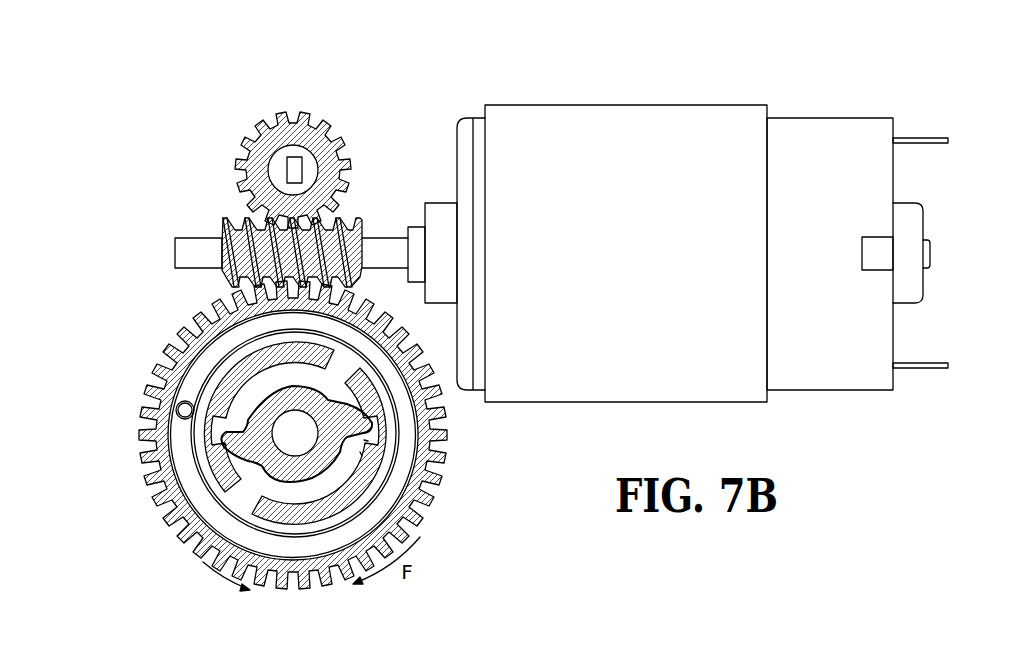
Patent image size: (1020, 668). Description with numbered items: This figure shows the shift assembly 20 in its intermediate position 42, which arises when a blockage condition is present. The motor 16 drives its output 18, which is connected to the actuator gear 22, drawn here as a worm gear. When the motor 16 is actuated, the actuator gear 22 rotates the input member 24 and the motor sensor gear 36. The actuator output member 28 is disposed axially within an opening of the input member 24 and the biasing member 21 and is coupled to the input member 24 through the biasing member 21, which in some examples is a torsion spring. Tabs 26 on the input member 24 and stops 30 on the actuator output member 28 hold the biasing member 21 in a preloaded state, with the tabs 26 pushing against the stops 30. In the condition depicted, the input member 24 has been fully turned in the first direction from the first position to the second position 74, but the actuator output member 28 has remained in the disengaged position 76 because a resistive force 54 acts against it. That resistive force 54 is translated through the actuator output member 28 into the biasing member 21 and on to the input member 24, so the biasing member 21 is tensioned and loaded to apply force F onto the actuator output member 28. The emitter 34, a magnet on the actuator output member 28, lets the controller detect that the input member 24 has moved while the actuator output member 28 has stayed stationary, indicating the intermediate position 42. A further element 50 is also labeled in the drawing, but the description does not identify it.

The motor 16 is at (620, 135).
The output 18 is at (390, 243).
The shift assembly 20 is at (108, 120).
The biasing member 21 is at (230, 528).
The actuator gear 22 is at (237, 248).
The input member 24 is at (366, 422).
The tabs 26 is at (240, 478).
The actuator output member 28 is at (262, 395).
The stops 30 is at (226, 445).
The emitter 34 is at (275, 148).
The motor sensor gear 36 is at (242, 197).
The intermediate position 42 is at (100, 250).
The pin 50 is at (167, 407).
The resistive force 54 is at (200, 562).
The second position 74 is at (267, 490).
The disengaged position 76 is at (362, 455).